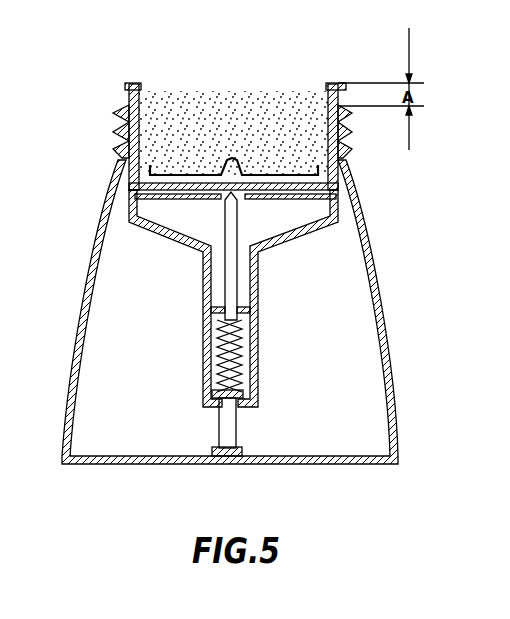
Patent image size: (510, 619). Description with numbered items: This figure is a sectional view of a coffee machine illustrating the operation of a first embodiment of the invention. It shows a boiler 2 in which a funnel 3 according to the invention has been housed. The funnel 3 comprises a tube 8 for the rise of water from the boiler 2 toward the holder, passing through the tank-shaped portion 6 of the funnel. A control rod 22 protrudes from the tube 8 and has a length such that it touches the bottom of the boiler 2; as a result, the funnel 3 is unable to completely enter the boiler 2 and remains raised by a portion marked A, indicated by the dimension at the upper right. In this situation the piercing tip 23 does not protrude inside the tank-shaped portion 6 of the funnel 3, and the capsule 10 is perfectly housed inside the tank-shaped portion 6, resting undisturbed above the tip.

The boiler 2 is at (392, 323).
The funnel 3 is at (288, 258).
The tank-shaped portion 6 is at (128, 88).
The tube 8 is at (256, 328).
The capsule 10 is at (333, 84).
The control rod 22 is at (229, 423).
The piercing tip 23 is at (237, 210).